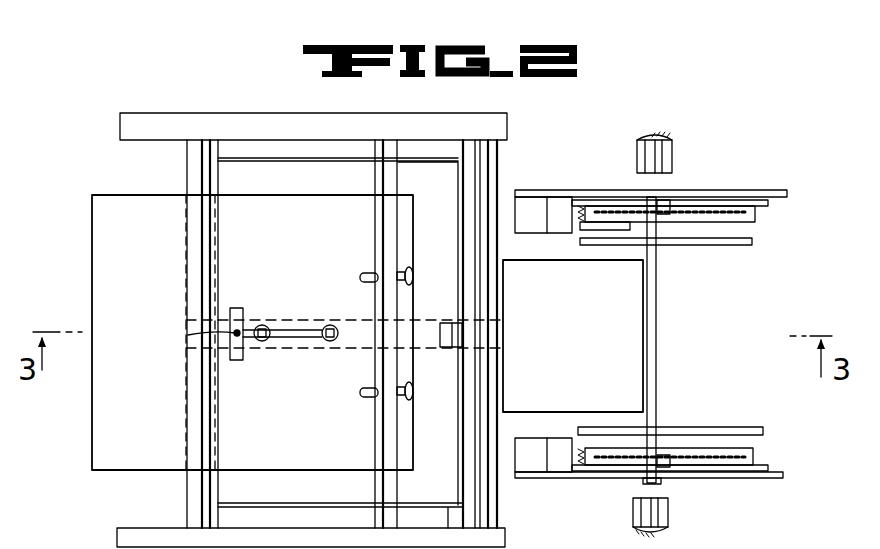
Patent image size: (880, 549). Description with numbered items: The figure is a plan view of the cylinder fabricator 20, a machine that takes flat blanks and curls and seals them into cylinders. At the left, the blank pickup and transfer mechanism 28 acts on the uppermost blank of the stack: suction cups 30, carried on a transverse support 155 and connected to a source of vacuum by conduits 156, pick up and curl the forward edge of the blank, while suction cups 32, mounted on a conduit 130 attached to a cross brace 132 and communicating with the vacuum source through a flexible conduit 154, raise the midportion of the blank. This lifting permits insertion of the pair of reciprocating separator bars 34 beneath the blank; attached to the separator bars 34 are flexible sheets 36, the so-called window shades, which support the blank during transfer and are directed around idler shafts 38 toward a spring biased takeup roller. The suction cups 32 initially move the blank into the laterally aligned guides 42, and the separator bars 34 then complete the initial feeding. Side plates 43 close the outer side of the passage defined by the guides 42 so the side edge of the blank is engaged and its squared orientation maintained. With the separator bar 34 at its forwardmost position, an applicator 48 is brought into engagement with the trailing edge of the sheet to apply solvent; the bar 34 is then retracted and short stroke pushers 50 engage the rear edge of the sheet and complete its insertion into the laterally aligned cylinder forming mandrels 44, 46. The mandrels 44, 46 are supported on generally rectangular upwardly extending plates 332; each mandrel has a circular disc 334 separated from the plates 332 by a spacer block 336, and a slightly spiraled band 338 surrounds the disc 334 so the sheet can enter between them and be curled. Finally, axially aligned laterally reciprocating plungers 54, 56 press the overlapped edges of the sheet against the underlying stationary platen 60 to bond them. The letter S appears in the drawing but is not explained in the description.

The cylinder fabricator 20 is at (228, 75).
The blank pickup and transfer mechanism 28 is at (258, 305).
The suction cups 30 is at (412, 388).
The suction cups 32 is at (330, 324).
The separator bars 34 is at (187, 167).
The flexible sheets 36 is at (294, 178).
The idler shafts 38 is at (458, 333).
The guides 42 is at (540, 222).
The side plates 43 is at (540, 190).
The cylinder forming mandrel 44 is at (758, 462).
The cylinder forming mandrel 46 is at (758, 212).
The applicator 48 is at (495, 360).
The short stroke pushers 50 is at (690, 240).
The plunger 54 is at (634, 518).
The plunger 56 is at (673, 152).
The stationary platen 60 is at (656, 343).
The conduit 130 is at (292, 338).
The cross brace 132 is at (238, 360).
The flexible conduit 154 is at (191, 334).
The transverse support 155 is at (377, 185).
The conduits 156 is at (366, 391).
The plates 332 is at (770, 192).
The circular disc 334 is at (617, 212).
The spacer block 336 is at (668, 205).
The band 338 is at (706, 218).
The sheet S is at (90, 452).